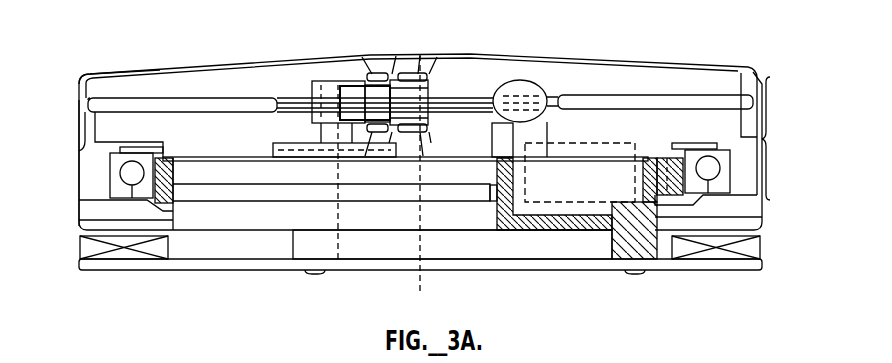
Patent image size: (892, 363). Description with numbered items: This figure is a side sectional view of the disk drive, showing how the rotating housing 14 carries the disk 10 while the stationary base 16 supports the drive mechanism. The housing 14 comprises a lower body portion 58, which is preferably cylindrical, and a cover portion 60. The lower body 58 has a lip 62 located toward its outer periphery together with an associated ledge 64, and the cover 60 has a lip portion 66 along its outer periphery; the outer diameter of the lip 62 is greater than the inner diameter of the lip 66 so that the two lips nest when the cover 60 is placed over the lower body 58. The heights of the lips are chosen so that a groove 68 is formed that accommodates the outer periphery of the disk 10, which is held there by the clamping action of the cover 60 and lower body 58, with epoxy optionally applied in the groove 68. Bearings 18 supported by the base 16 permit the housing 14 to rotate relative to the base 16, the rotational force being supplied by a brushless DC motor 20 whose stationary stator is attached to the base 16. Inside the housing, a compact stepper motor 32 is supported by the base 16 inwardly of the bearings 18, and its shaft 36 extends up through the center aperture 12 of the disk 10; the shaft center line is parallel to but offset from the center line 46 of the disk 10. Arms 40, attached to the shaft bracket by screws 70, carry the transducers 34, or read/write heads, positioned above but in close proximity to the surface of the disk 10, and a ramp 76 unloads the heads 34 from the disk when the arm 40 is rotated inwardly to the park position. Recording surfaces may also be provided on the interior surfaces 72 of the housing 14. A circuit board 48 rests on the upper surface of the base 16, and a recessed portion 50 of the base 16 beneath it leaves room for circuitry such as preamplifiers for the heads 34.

The disk 10 is at (235, 99).
The center aperture 12 is at (459, 96).
The housing 14 is at (722, 68).
The base 16 is at (509, 188).
The bearings 18 is at (119, 181).
The brushless DC motor 20 is at (768, 228).
The stepper motor 32 is at (440, 220).
The transducers 34 is at (418, 113).
The shaft 36 is at (323, 131).
The arms 40 is at (393, 74).
The center line of disk 46 is at (424, 285).
The circuit board 48 is at (252, 152).
The recessed portion 50 is at (595, 189).
The lower body portion 58 is at (86, 168).
The cover portion 60 is at (85, 91).
The lip 62 is at (96, 125).
The ledge 64 is at (80, 147).
The lip portion 66 is at (85, 125).
The groove 68 is at (93, 97).
The screws 70 is at (372, 72).
The interior surfaces 72 is at (674, 66).
The ramp 76 is at (541, 86).